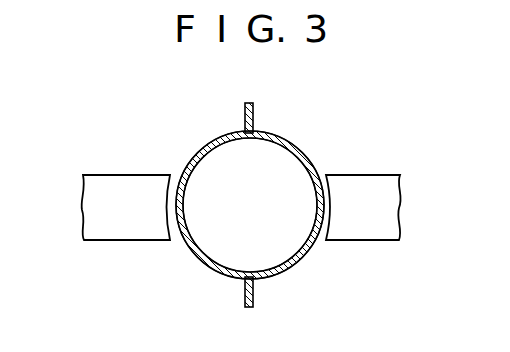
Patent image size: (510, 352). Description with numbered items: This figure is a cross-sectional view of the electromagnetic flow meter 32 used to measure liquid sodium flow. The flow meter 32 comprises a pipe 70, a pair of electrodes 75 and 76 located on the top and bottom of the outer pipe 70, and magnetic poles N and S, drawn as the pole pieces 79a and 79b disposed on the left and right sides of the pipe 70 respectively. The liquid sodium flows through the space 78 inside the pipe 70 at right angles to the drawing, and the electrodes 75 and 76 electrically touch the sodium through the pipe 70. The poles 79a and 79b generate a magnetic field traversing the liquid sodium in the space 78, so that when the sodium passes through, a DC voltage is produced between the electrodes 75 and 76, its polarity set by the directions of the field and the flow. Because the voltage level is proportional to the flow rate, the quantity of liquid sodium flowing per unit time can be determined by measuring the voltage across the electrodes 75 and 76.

The electromagnetic flow meter 32 is at (292, 129).
The pipe 70 is at (213, 142).
The space 78 is at (202, 173).
The electrode 75 is at (251, 121).
The electrode 76 is at (245, 291).
The north pole magnet 79a is at (95, 185).
The south pole magnet 79b is at (397, 185).